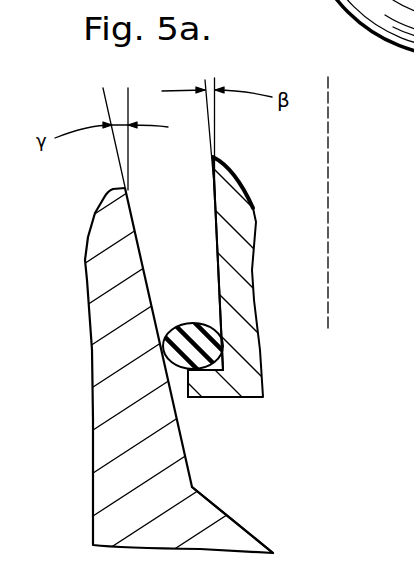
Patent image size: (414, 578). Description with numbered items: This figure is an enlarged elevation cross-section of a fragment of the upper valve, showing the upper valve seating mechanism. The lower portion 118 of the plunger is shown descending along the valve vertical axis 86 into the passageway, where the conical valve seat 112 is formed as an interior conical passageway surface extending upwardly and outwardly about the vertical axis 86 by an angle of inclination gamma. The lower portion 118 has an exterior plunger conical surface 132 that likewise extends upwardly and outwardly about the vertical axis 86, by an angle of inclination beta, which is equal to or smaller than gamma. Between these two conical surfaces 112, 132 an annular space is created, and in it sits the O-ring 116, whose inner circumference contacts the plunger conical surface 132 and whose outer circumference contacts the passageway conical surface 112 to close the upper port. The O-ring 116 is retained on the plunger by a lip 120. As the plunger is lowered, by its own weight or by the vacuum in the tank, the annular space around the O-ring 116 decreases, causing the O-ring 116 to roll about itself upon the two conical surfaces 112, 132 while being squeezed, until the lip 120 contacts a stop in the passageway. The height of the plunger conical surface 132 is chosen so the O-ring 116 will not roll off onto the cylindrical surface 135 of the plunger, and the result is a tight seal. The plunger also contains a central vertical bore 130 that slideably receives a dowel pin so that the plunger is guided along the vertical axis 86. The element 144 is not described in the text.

The conical valve seat 112 is at (137, 257).
The O-ring 116 is at (181, 323).
The lower portion of the plunger 118 is at (246, 352).
The lip 120 is at (183, 383).
The central vertical bore 130 is at (195, 488).
The plunger conical surface 132 is at (215, 237).
The cylindrical surface of the plunger 135 is at (211, 159).
The hard coating layer 144 is at (234, 178).
The valve vertical axis 86 is at (329, 247).